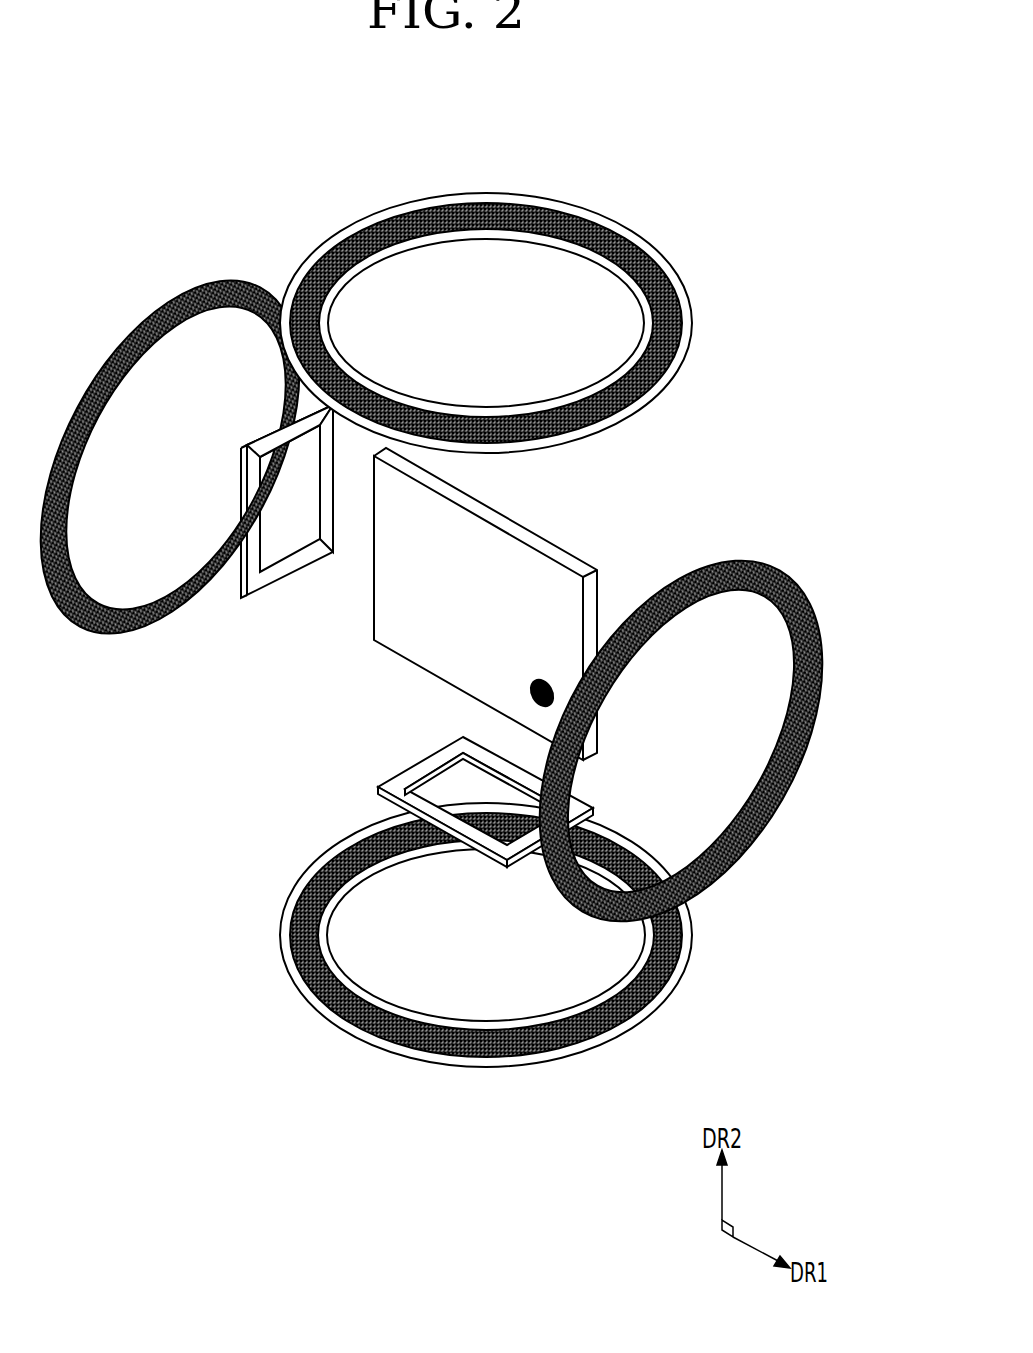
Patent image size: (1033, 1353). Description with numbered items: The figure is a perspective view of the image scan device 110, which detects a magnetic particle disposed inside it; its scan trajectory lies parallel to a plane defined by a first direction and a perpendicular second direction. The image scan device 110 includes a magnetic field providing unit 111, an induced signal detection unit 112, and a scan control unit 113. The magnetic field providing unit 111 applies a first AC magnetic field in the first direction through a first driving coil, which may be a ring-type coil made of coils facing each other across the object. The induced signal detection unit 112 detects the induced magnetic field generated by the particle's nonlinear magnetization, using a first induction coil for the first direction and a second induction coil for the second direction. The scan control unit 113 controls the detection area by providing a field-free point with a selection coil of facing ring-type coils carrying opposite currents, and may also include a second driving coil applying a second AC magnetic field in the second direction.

The image scan device 110 is at (711, 132).
The magnetic field providing unit 111 is at (203, 287).
The induced signal detection unit 112 is at (390, 787).
The scan control unit 113 is at (281, 934).